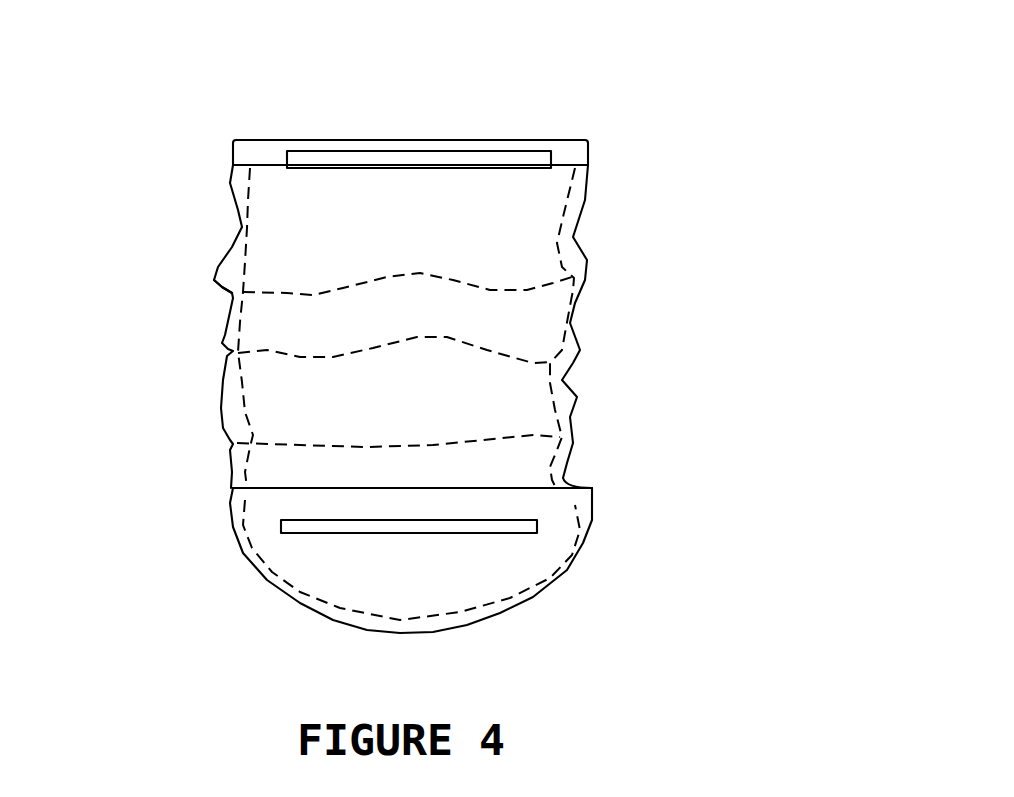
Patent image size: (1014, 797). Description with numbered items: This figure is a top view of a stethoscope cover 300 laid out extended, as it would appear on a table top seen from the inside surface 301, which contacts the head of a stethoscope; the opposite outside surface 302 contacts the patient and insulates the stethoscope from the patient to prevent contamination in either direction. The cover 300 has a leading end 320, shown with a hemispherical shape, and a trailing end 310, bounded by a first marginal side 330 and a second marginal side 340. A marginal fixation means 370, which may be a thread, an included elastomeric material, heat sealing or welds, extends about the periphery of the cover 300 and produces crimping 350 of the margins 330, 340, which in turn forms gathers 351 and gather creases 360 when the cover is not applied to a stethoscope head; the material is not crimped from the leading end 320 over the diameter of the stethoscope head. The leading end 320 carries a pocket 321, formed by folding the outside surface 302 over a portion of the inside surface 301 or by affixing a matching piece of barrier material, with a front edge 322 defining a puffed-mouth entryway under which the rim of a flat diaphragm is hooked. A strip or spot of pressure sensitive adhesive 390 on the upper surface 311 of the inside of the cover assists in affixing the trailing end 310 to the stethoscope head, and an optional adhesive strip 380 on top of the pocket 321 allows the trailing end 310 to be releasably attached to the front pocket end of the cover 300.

The stethoscope cover 300 is at (560, 275).
The inside surface 301 is at (312, 268).
The outside surface 302 is at (696, 326).
The trailing end 310 is at (310, 120).
The upper surface 311 is at (233, 81).
The leading end 320 is at (205, 567).
The pocket 321 is at (355, 601).
The front edge 322 is at (308, 455).
The first marginal side 330 is at (281, 394).
The second marginal side 340 is at (690, 328).
The crimping 350 is at (127, 243).
The gathers 351 is at (282, 315).
The gather creases 360 is at (533, 317).
The marginal fixation means 370 is at (588, 586).
The adhesive strip 380 is at (548, 573).
The pressure sensitive adhesive 390 is at (481, 107).